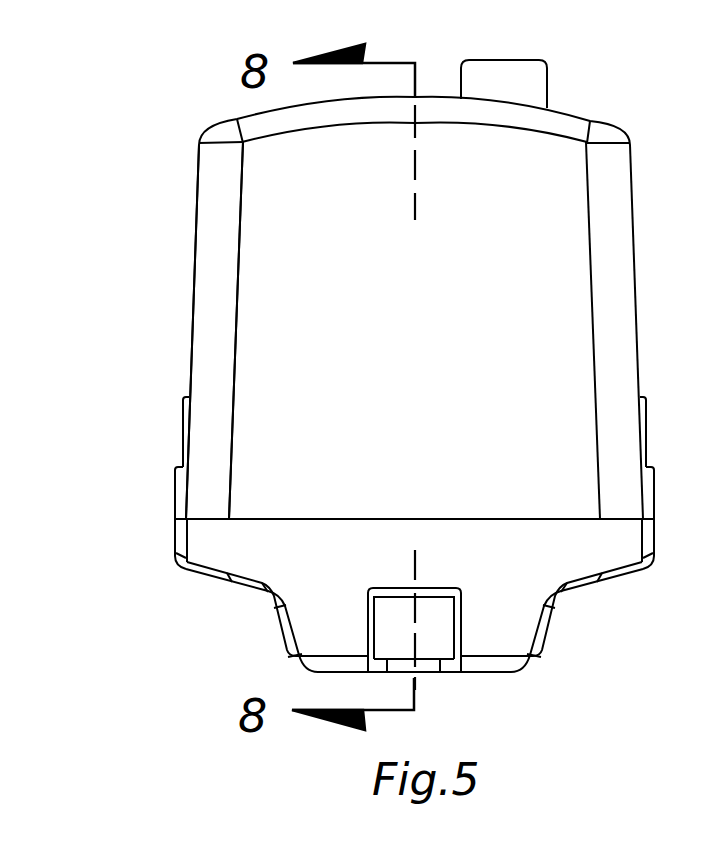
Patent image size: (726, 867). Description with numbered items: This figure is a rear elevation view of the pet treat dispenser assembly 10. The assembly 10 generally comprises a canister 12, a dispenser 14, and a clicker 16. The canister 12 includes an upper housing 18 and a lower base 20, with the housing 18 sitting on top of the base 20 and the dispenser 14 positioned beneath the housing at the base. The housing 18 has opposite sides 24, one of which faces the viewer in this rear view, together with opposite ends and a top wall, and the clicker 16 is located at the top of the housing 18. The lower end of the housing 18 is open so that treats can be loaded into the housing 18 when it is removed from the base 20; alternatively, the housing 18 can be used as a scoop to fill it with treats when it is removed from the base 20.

The pet treat dispenser assembly 10 is at (162, 62).
The canister 12 is at (598, 263).
The dispenser 14 is at (440, 593).
The clicker 16 is at (500, 62).
The upper housing 18 is at (212, 232).
The lower base 20 is at (242, 590).
The opposite sides 24 is at (417, 372).